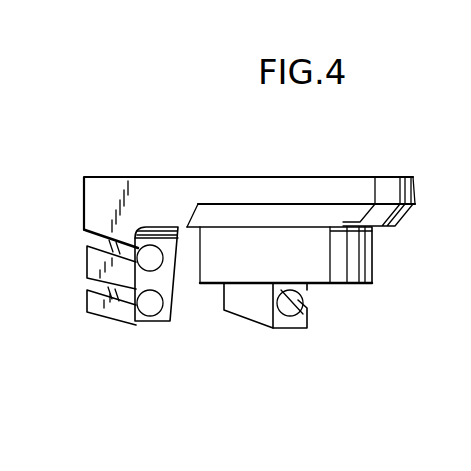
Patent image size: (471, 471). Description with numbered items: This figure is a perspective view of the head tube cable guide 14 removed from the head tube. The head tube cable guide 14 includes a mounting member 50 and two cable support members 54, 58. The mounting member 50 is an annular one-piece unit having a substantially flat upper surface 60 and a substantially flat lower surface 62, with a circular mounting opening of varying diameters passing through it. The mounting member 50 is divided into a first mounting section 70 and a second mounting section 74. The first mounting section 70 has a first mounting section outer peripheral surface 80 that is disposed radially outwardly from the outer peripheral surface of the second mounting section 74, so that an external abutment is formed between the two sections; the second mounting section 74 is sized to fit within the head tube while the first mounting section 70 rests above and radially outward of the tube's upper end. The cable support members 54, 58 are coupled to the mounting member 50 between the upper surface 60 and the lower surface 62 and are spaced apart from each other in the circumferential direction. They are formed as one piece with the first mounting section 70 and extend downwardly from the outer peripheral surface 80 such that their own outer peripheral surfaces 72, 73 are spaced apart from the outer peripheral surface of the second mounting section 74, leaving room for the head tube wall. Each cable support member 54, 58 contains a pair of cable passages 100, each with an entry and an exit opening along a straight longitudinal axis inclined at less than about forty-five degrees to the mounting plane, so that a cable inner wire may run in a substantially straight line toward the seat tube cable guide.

The head tube cable guide 14 is at (340, 172).
The upper surface 60 is at (236, 177).
The first mounting section outer peripheral surface 80 is at (293, 192).
The first mounting section 70 is at (404, 178).
The mounting member 50 is at (370, 229).
The outer peripheral surface 72 is at (176, 251).
The second mounting section 74 is at (316, 274).
The lower surface 62 is at (215, 287).
The cable passage 100 is at (88, 235).
The cable support member 54 is at (122, 322).
The outer peripheral surface 73 is at (247, 302).
The cable support member 58 is at (309, 320).